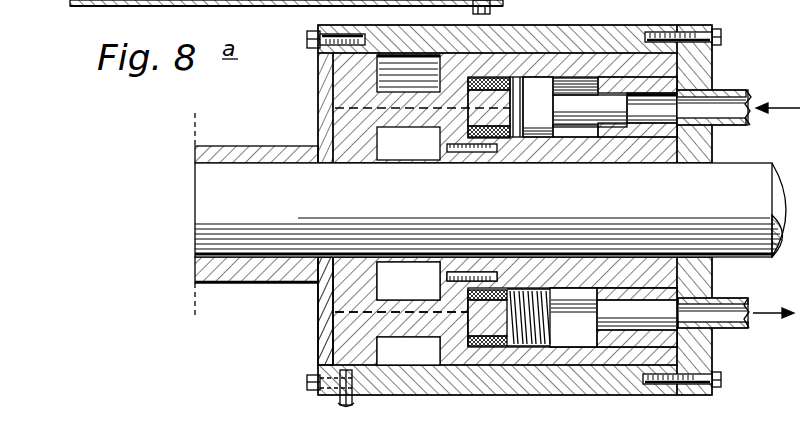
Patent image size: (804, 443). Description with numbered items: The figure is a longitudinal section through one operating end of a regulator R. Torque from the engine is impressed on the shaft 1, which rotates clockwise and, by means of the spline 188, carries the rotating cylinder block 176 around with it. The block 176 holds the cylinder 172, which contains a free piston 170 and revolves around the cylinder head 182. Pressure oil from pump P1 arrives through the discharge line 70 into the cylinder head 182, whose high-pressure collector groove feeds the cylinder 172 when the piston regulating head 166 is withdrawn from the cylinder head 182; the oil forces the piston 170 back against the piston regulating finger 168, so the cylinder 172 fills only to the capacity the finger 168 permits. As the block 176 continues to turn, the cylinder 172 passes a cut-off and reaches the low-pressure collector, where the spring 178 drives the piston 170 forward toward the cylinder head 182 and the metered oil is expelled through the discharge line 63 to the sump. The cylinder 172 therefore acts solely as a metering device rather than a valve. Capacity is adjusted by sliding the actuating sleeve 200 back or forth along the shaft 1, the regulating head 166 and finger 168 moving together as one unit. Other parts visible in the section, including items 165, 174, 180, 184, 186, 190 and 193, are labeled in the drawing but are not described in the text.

The shaft 1 is at (213, 202).
The discharge line 63 is at (730, 298).
The discharge line 70 is at (746, 93).
The frame member 165 is at (214, 0).
The piston regulating head 166 is at (337, 70).
The piston regulating finger 168 is at (413, 78).
The free piston 170 is at (566, 93).
The cylinder 172 is at (648, 112).
The lower pocket 174 is at (449, 346).
The rotating cylinder block 176 is at (657, 152).
The spring 178 is at (538, 80).
The bore 180 is at (600, 131).
The cylinder head 182 is at (700, 66).
The left end plate 184 is at (315, 337).
The passage 186 is at (345, 108).
The spline 188 is at (481, 168).
The chamber 190 is at (455, 132).
The bar 193 is at (386, 0).
The actuating sleeve 200 is at (244, 146).
The regulator R is at (126, 6).